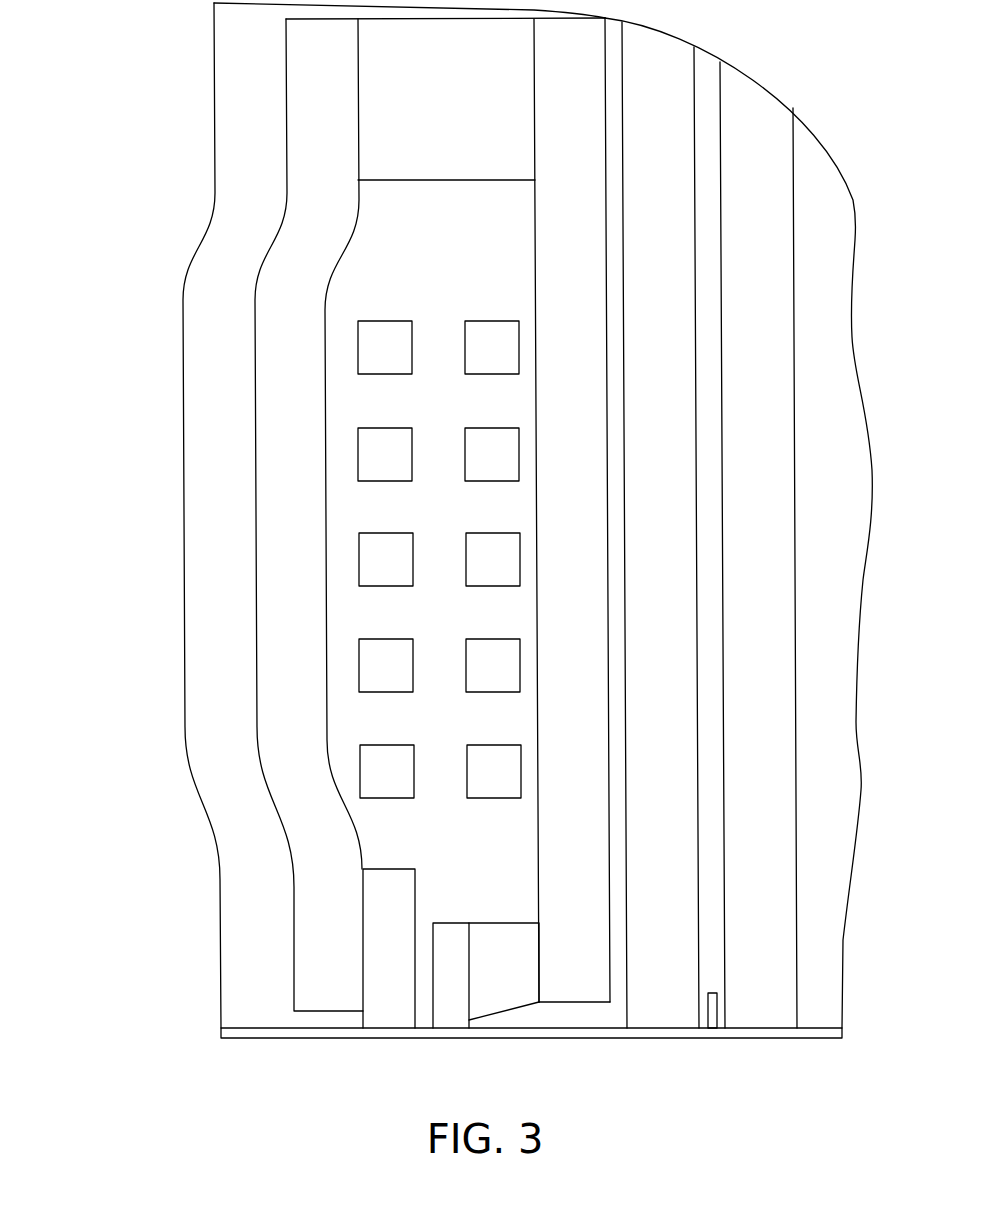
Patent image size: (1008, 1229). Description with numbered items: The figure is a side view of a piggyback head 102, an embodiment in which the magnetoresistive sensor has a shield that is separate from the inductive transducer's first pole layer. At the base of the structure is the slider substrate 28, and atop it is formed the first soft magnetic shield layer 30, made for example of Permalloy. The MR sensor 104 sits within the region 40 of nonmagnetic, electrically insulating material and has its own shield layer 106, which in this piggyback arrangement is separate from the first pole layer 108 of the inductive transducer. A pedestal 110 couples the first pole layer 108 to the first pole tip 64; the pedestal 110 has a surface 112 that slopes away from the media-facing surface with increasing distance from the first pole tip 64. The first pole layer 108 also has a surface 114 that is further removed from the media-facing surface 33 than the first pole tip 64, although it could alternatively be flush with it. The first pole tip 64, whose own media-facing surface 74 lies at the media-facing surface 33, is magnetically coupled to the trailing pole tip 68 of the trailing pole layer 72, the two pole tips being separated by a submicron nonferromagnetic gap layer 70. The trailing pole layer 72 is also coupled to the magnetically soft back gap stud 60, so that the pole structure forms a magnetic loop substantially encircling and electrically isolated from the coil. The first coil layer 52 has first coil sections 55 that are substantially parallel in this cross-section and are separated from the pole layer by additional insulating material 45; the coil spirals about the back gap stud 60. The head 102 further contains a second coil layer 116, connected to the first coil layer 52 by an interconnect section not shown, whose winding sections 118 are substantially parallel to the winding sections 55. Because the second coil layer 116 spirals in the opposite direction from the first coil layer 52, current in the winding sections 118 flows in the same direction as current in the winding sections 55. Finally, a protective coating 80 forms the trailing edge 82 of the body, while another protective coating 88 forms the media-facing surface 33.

The slider substrate 28 is at (820, 541).
The first soft magnetic shield layer 30 is at (775, 652).
The media-facing surface 33 is at (273, 1040).
The nonmagnetic electrically insulating region 40 is at (722, 301).
The nonmagnetic electrically insulating material 45 is at (464, 617).
The first coil layer 52 is at (532, 499).
The first coil sections 55 is at (519, 349).
The back gap stud 60 is at (461, 106).
The first pole tip 64 is at (452, 923).
The trailing pole tip 68 is at (387, 869).
The nonferromagnetic gap layer 70 is at (415, 1010).
The trailing pole layer 72 is at (306, 629).
The media-facing surface of the pole tip 74 is at (327, 1012).
The protective coating 80 is at (234, 566).
The trailing edge 82 is at (181, 463).
The protective coating 88 is at (826, 1028).
The piggyback head 102 is at (146, 623).
The MR sensor 104 is at (720, 1011).
The shield layer 106 is at (684, 652).
The first pole layer 108 is at (596, 741).
The pedestal 110 is at (503, 930).
The sloping surface 112 is at (505, 1011).
The surface of first pole layer 114 is at (574, 1002).
The second coil layer 116 is at (338, 499).
The winding sections 118 is at (358, 349).